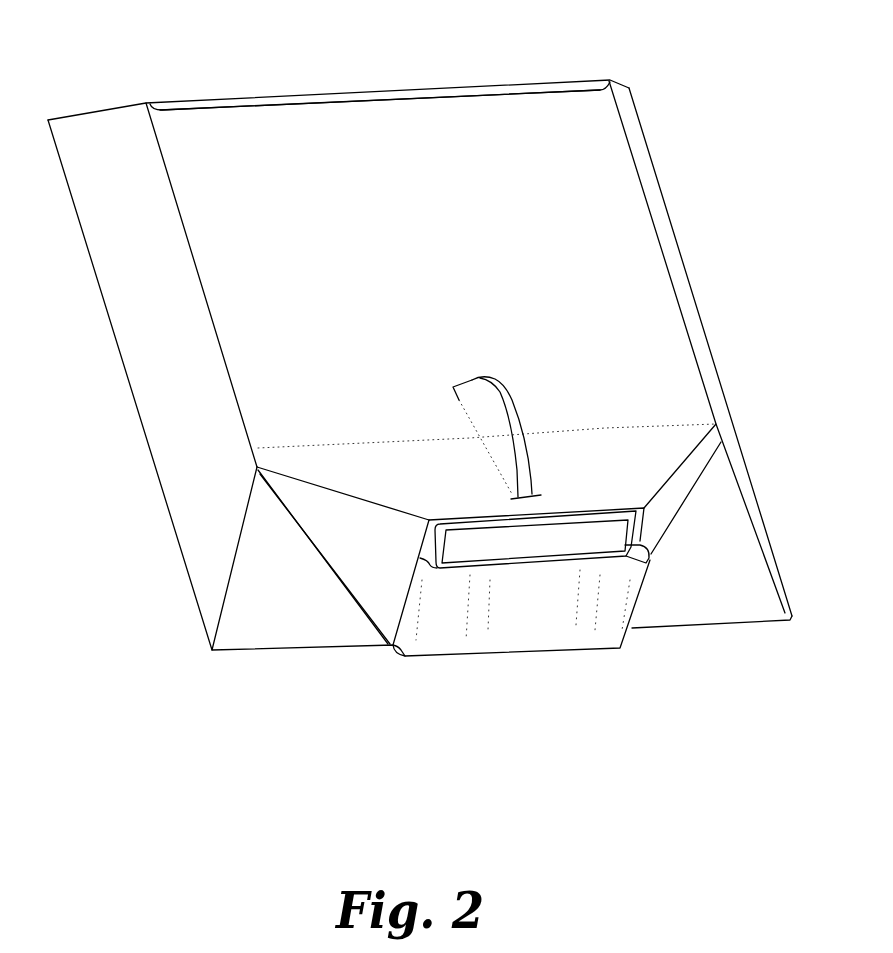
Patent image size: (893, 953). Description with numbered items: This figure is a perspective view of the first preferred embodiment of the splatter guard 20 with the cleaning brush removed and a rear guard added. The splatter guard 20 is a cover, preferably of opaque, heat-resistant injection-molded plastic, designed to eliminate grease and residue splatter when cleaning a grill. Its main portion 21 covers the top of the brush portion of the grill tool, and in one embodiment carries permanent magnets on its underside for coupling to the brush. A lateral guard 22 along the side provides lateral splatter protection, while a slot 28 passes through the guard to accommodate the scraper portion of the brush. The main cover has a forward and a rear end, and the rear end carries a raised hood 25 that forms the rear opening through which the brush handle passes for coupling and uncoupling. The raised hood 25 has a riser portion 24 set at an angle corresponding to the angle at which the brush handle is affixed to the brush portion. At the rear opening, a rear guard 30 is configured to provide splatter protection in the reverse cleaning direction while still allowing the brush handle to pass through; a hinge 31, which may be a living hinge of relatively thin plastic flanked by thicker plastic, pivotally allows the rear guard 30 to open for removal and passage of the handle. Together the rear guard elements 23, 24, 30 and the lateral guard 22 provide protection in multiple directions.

The splatter guard 20 is at (437, 376).
The main portion 21 is at (313, 130).
The lateral guard 22 is at (150, 338).
The rear guard 23 is at (287, 603).
The riser portion 24 is at (388, 597).
The raised hood 25 is at (678, 445).
The slot 28 is at (457, 92).
The rear guard 30 is at (535, 617).
The hinge 31 is at (637, 572).